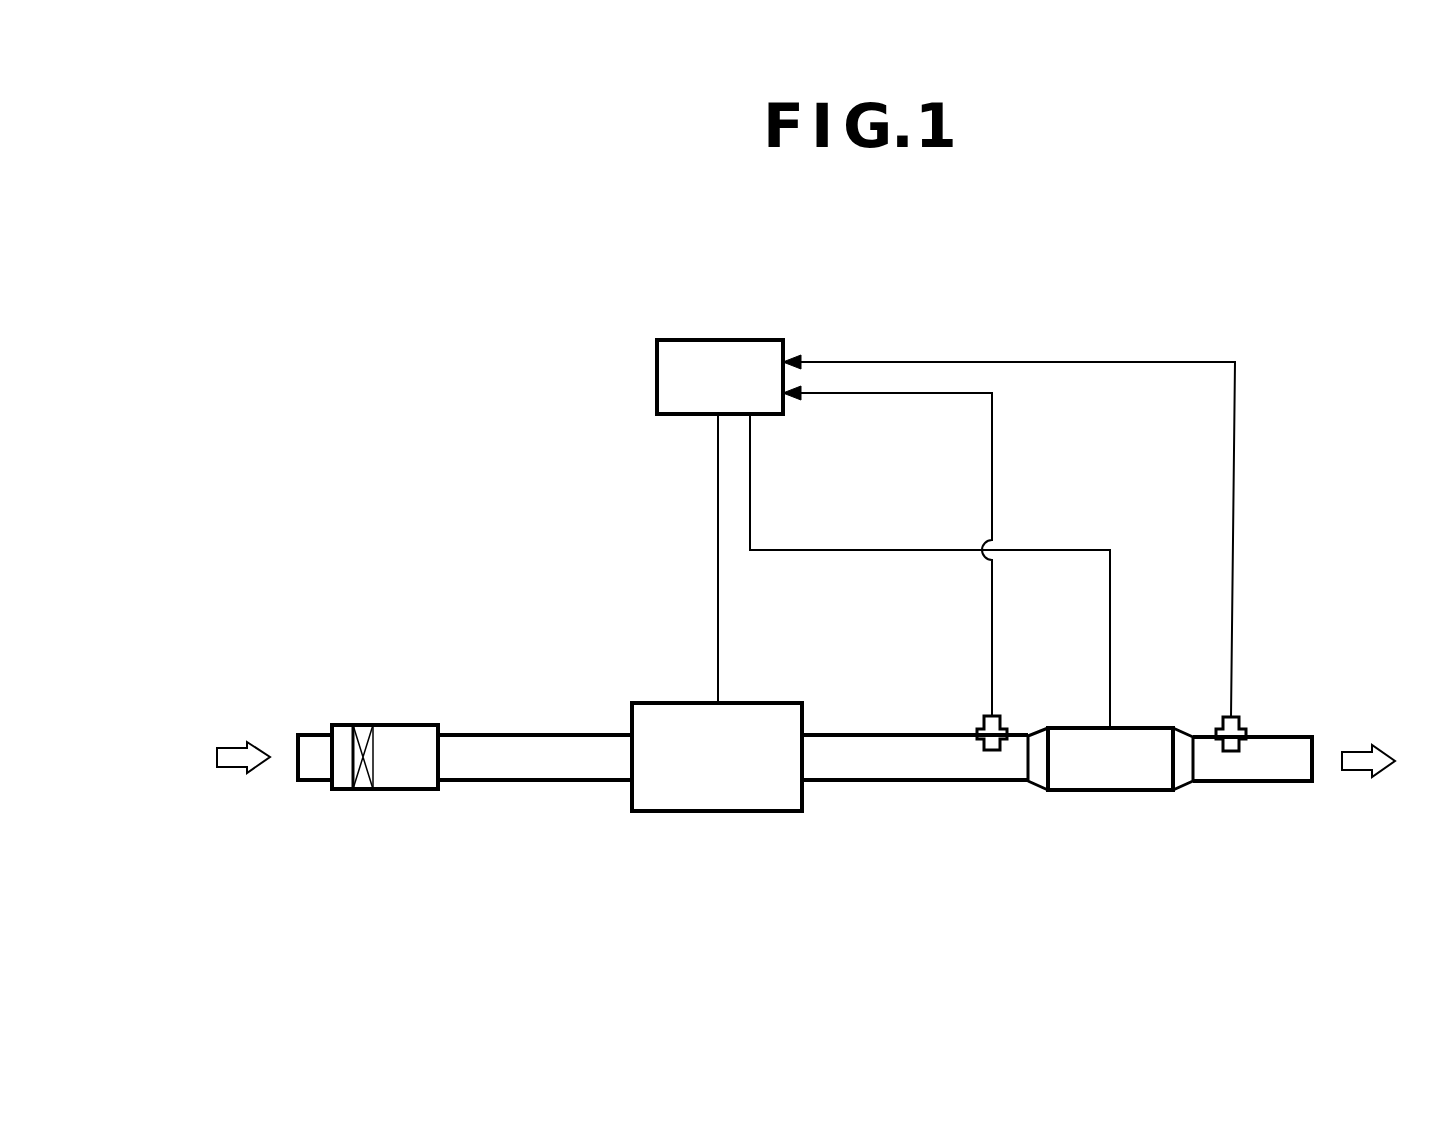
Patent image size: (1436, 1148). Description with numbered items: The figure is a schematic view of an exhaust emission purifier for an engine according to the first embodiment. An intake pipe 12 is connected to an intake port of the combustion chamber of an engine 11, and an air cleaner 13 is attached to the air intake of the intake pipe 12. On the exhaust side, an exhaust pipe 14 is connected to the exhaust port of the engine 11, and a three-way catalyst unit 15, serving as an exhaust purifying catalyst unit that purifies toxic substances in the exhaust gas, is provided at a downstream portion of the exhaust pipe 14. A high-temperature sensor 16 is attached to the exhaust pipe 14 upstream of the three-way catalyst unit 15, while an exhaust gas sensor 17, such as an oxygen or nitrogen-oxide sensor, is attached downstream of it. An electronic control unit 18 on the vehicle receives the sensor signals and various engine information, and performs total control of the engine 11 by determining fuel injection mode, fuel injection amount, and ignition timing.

The engine 11 is at (713, 811).
The intake pipe 12 is at (517, 780).
The air cleaner 13 is at (393, 789).
The exhaust pipe 14 is at (858, 780).
The three-way catalyst unit 15 is at (1080, 790).
The high-temperature sensor 16 is at (977, 732).
The exhaust gas sensor 17 is at (1246, 732).
The electronic control unit (ECU) 18 is at (657, 374).